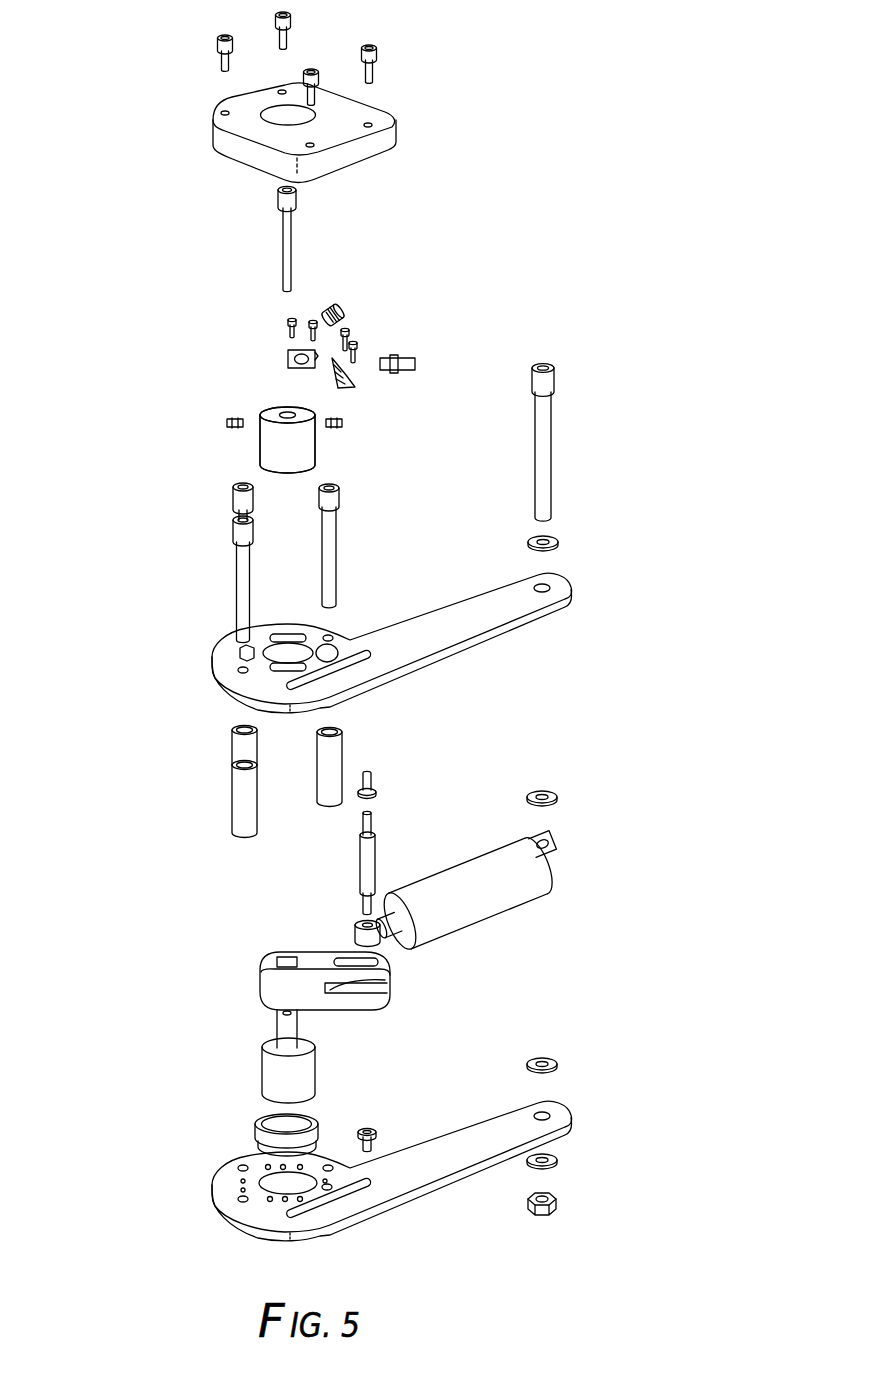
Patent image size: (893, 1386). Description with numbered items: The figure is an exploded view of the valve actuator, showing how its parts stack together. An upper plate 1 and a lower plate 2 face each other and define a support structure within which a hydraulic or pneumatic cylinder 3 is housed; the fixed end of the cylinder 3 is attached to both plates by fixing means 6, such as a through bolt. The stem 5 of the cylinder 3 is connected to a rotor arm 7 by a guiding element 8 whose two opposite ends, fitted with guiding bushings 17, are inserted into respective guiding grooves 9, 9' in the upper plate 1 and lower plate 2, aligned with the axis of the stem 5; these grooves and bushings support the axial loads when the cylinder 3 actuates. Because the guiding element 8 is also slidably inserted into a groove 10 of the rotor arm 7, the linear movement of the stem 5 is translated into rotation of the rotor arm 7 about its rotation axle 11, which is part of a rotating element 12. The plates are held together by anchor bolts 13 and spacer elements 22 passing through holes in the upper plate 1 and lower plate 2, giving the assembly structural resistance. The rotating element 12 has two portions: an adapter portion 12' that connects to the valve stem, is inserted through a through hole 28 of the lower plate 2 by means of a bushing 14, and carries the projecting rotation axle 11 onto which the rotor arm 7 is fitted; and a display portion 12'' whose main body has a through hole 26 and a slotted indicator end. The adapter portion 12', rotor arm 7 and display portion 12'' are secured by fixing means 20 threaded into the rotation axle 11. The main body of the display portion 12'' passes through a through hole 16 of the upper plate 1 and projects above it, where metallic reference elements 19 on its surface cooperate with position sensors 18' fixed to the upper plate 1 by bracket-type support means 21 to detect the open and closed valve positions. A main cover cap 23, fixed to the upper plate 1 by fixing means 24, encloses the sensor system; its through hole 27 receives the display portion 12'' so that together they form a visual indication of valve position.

The upper plate 1 is at (537, 610).
The lower plate 2 is at (550, 1135).
The hydraulic or pneumatic cylinder 3 is at (553, 873).
The stem 5 is at (357, 930).
The fixing means 6 is at (543, 447).
The rotor arm 7 is at (273, 988).
The guiding element 8 is at (365, 865).
The guiding groove 9 is at (379, 679).
The guiding groove 9' is at (227, 1214).
The groove of the rotor arm 10 is at (387, 978).
The rotation axle 11 is at (287, 1030).
The rotating element 12 is at (355, 440).
The adapter portion 12' is at (197, 1070).
The display portion 12'' is at (177, 441).
The anchor bolts 13 is at (335, 500).
The bushing 14 is at (257, 1130).
The through hole of the upper plate 16 is at (250, 633).
The guiding bushings 17 is at (375, 782).
The position sensor 18' is at (434, 329).
The metallic reference element 19 is at (225, 422).
The fixing means 20 is at (285, 230).
The support means 21 is at (330, 380).
The spacer elements 22 is at (240, 782).
The main cover cap 23 is at (397, 131).
The fixing means 24 is at (303, 78).
The through hole 26 is at (285, 404).
The through hole 27 is at (272, 112).
The through hole of the lower plate 28 is at (287, 1183).